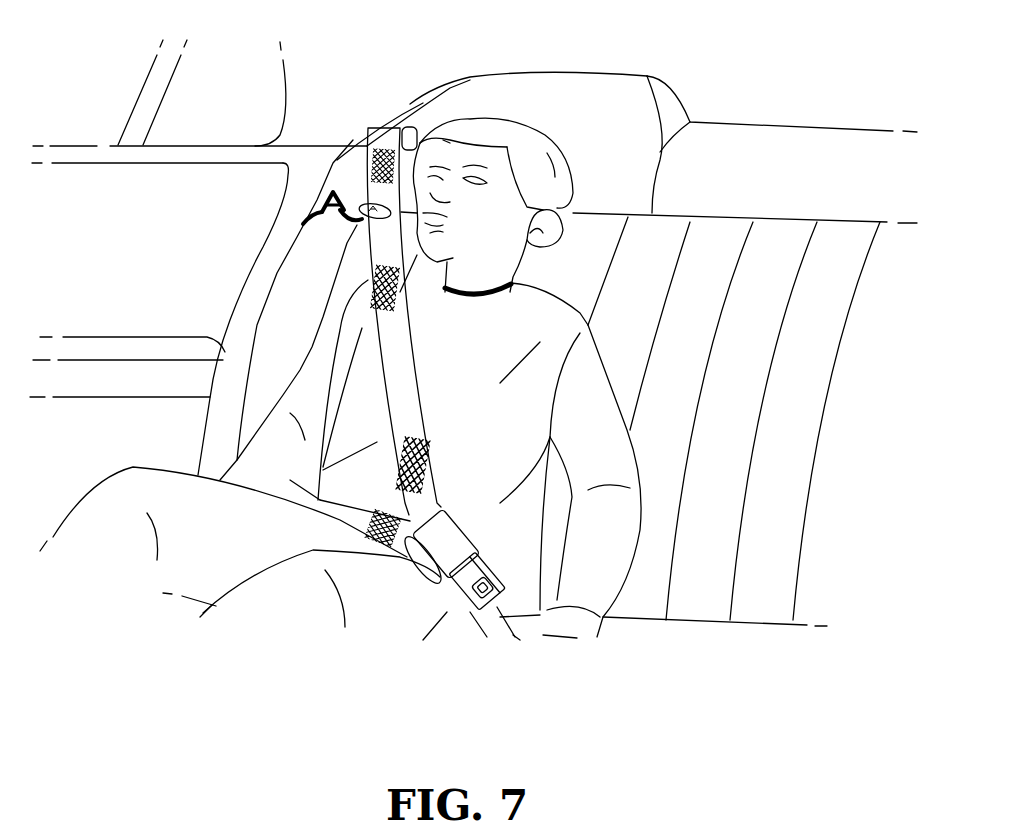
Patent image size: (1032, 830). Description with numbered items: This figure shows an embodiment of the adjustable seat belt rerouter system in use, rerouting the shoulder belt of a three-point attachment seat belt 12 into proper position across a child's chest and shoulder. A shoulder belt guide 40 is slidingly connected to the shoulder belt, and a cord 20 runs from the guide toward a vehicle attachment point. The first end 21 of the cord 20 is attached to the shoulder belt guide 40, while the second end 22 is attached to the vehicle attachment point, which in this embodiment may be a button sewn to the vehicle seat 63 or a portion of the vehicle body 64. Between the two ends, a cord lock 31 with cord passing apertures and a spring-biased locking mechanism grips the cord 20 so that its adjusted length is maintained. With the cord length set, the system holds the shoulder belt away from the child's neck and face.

The three-point attachment seat belt 12 is at (397, 619).
The cord 20 is at (333, 193).
The first end 21 is at (353, 221).
The second end 22 is at (313, 227).
The cord lock 31 is at (338, 205).
The shoulder belt guide 40 is at (386, 160).
The vehicle seat 63 is at (350, 160).
The vehicle body 64 is at (302, 160).